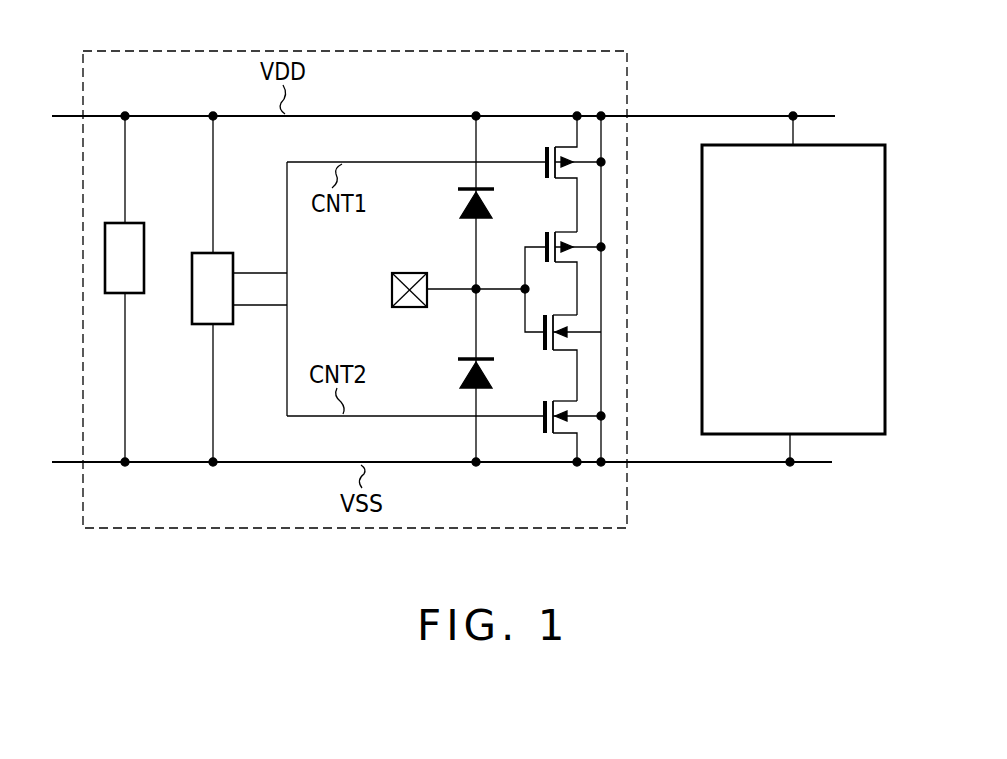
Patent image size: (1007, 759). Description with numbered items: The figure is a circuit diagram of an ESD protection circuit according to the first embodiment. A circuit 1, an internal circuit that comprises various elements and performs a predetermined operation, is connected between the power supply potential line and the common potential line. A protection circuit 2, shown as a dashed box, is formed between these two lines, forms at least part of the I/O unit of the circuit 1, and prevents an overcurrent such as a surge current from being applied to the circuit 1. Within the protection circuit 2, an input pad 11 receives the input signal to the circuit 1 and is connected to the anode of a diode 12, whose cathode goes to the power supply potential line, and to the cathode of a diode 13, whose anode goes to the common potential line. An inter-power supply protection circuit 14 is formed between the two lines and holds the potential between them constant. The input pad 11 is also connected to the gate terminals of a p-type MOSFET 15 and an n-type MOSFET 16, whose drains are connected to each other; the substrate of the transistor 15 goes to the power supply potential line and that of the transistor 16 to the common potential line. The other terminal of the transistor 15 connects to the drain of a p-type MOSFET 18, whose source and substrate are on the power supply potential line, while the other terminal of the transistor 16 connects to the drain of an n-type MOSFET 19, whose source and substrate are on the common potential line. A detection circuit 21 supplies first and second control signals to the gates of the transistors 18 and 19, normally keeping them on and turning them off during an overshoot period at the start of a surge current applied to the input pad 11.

The circuit 1 is at (858, 143).
The ESD protection circuit 2 is at (388, 50).
The input pad 11 is at (390, 289).
The diode 12 is at (459, 205).
The diode 13 is at (458, 372).
The inter-power supply protection circuit 14 is at (114, 295).
The p-type MOSFET 15 is at (563, 224).
The n-type MOSFET 16 is at (555, 353).
The p-type MOSFET 18 is at (562, 133).
The n-type MOSFET 19 is at (562, 441).
The detection circuit 21 is at (200, 326).